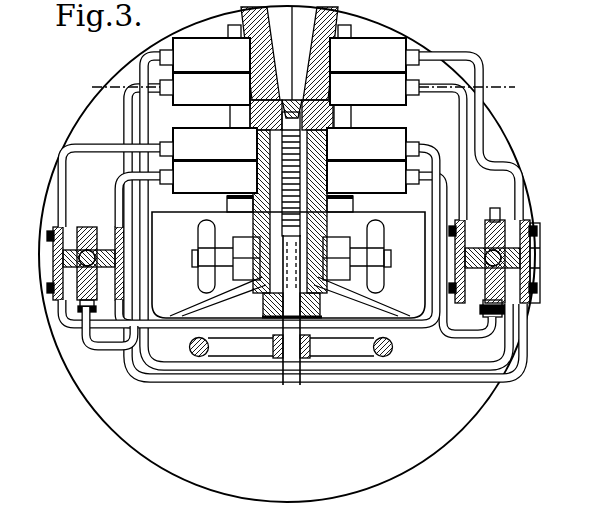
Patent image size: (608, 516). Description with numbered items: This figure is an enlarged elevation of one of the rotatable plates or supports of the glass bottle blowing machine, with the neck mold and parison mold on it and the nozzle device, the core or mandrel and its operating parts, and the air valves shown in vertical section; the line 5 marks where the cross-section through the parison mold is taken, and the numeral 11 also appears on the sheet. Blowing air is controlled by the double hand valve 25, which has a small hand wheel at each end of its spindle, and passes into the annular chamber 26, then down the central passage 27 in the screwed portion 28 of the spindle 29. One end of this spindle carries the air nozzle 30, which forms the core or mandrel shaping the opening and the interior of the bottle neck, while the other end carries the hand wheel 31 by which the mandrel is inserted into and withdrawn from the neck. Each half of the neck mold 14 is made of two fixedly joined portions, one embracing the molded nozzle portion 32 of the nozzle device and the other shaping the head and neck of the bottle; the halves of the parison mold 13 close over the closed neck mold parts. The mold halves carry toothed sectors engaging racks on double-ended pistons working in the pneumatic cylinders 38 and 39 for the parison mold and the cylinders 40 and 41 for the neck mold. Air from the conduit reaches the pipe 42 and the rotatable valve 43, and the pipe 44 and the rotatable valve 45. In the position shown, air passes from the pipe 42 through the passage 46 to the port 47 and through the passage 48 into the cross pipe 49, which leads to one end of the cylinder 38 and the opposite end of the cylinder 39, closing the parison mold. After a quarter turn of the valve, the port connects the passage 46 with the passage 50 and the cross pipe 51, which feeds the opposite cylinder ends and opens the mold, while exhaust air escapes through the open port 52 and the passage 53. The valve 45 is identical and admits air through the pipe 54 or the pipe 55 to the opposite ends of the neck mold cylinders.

The section line 5 is at (302, 87).
The casing 11 is at (287, 254).
The parison mold 13 is at (242, 16).
The neck mold 14 is at (258, 140).
The hand valve 25 is at (200, 240).
The annular chamber 26 is at (255, 282).
The central passage 27 is at (318, 212).
The screwed portion 28 is at (375, 250).
The spindle 29 is at (291, 385).
The air nozzle 30 is at (352, 117).
The hand wheel 31 is at (386, 357).
The molded nozzle portion 32 is at (240, 213).
The pneumatic cylinder 38 is at (182, 100).
The pneumatic cylinder 39 is at (190, 46).
The pneumatic cylinder 40 is at (195, 190).
The pneumatic cylinder 41 is at (204, 136).
The pipe 42 is at (395, 312).
The rotatable valve 43 is at (538, 236).
The pipe 44 is at (185, 311).
The rotatable valve 45 is at (50, 255).
The passage 46 is at (505, 310).
The port 47 is at (536, 290).
The passage 48 is at (492, 226).
The cross pipe 49 is at (140, 58).
The passage 50 is at (536, 275).
The cross pipe 51 is at (126, 108).
The port 52 is at (538, 257).
The passage 53 is at (522, 223).
The pipe 54 is at (119, 190).
The pipe 55 is at (64, 182).